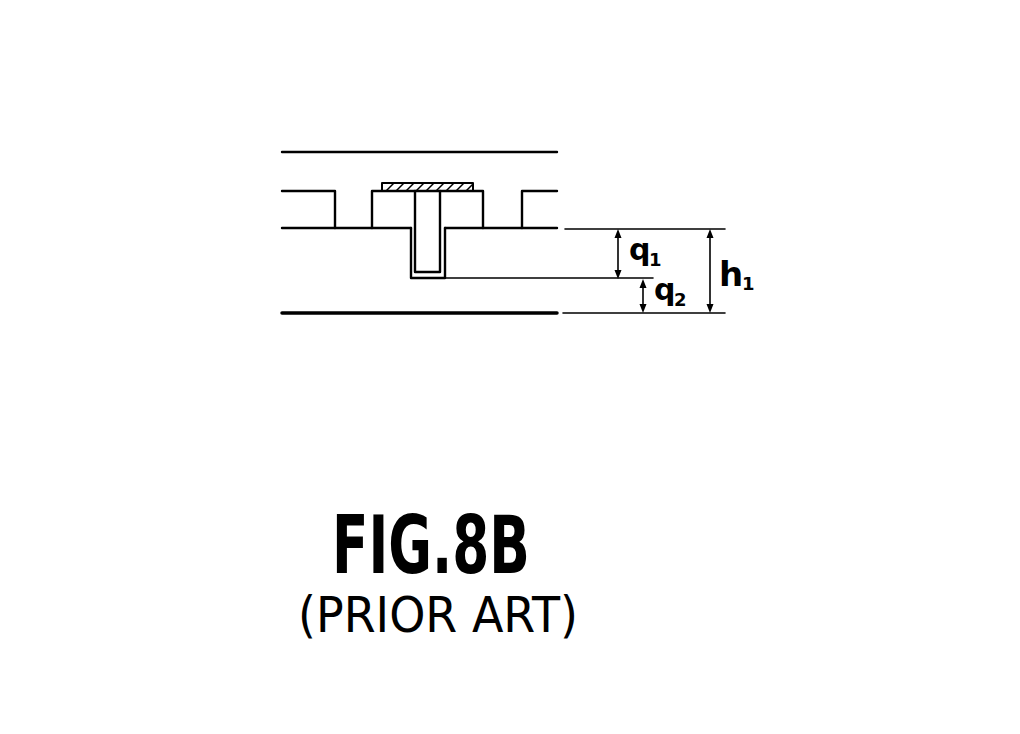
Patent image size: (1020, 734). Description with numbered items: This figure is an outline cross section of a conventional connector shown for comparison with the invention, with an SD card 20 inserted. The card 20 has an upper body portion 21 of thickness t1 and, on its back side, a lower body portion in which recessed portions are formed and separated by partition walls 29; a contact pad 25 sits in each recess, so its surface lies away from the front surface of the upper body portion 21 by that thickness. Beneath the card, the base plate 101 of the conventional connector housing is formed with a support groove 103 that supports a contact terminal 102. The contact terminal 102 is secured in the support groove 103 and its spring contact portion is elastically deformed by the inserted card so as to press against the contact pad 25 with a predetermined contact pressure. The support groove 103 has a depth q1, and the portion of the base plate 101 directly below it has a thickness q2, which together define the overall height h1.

The card 20 is at (495, 134).
The upper body portion 21 is at (428, 197).
The contact pad 25 is at (410, 183).
The partition wall 29 is at (343, 212).
The base plate 101 is at (327, 300).
The contact terminal 102 is at (436, 183).
The support groove 103 is at (447, 271).